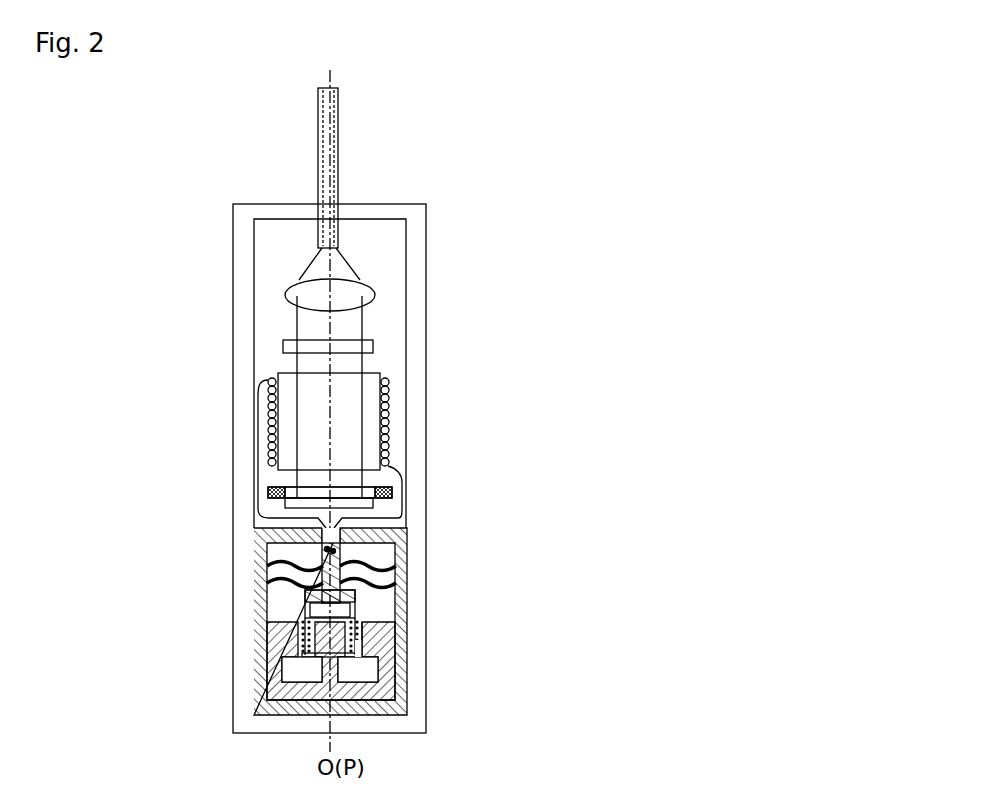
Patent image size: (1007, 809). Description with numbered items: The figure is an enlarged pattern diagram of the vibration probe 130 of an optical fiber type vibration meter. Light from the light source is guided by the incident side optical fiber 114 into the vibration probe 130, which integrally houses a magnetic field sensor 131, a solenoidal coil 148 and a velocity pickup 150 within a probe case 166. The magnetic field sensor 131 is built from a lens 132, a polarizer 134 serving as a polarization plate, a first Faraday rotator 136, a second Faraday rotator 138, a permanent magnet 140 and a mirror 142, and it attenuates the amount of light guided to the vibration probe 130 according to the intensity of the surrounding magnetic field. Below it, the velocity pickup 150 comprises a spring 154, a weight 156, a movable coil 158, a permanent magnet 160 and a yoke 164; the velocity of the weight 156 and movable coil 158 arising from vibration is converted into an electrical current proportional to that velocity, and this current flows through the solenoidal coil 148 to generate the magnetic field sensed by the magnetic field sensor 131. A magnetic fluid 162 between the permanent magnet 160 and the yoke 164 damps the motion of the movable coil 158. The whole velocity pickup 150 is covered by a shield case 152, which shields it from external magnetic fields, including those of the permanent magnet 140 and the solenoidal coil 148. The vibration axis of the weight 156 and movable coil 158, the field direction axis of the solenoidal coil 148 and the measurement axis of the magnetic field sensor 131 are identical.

The incident side optical fiber 114 is at (318, 157).
The vibration probe 130 is at (463, 454).
The magnetic field sensor 131 is at (442, 383).
The lens 132 is at (363, 293).
The polarizer 134 is at (365, 347).
The first Faraday rotator 136 is at (365, 390).
The second Faraday rotator 138 is at (352, 488).
The permanent magnet 140 is at (386, 484).
The mirror 142 is at (373, 505).
The solenoidal coil 148 is at (255, 438).
The velocity pickup 150 is at (572, 624).
The shield case 152 is at (395, 533).
The spring 154 is at (396, 578).
The weight 156 is at (356, 597).
The movable coil 158 is at (359, 636).
The permanent magnet 160 is at (378, 668).
The magnetic fluid 162 is at (362, 655).
The yoke 164 is at (400, 708).
The probe case 166 is at (250, 722).